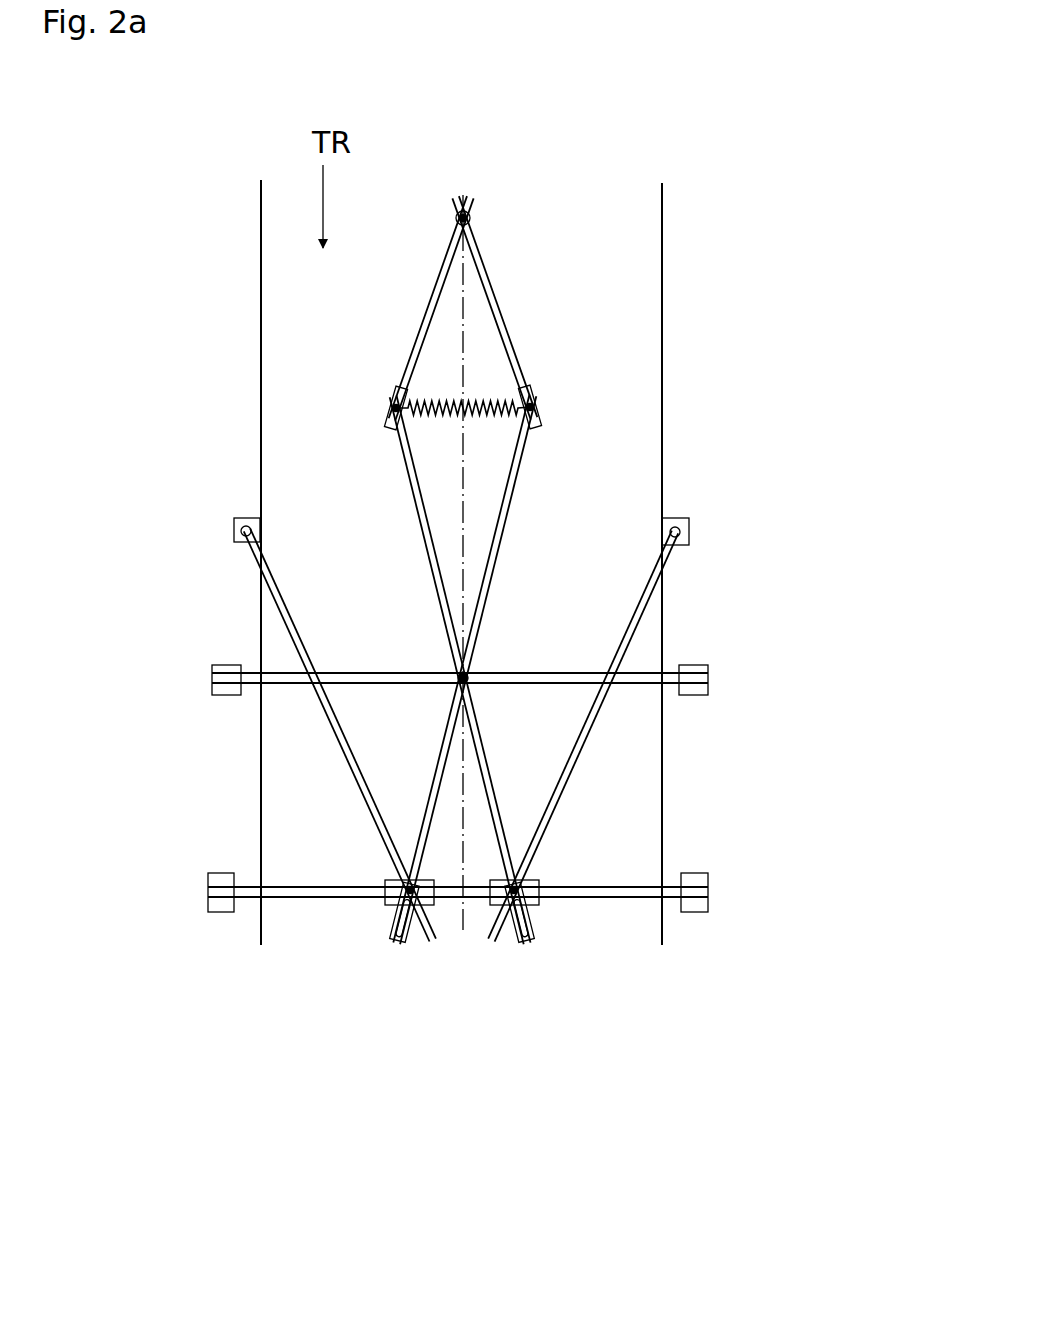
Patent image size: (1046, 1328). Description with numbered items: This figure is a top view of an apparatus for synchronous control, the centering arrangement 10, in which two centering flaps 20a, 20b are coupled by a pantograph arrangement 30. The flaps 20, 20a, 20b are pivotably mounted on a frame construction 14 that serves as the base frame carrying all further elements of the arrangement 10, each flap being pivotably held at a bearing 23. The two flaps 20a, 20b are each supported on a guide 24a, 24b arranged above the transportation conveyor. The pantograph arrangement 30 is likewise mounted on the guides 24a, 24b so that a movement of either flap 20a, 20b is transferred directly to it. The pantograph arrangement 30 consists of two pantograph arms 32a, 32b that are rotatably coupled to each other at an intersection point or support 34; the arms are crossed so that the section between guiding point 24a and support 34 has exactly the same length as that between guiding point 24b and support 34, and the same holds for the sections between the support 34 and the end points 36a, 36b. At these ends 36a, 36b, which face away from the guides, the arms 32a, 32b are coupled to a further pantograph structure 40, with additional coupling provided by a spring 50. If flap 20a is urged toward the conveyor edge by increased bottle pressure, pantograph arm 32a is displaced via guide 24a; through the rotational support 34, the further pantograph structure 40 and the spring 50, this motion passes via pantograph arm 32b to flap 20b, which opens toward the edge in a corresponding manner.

The centering arrangement 10 is at (340, 1158).
The frame 14 is at (582, 232).
The guide struts 20 is at (473, 672).
The centering flap 20a is at (296, 638).
The centering flap 20b is at (626, 640).
The strut pivot bearing 23 is at (240, 522).
The guide 24a is at (390, 900).
The guide 24b is at (530, 898).
The pantograph arrangement 30 is at (424, 587).
The pantograph arm 32a is at (508, 484).
The pantograph arm 32b is at (418, 484).
The support 34 is at (470, 682).
The end point 36a is at (532, 407).
The end point 36b is at (394, 407).
The further pantograph structure 40 is at (404, 283).
The spring 50 is at (492, 400).